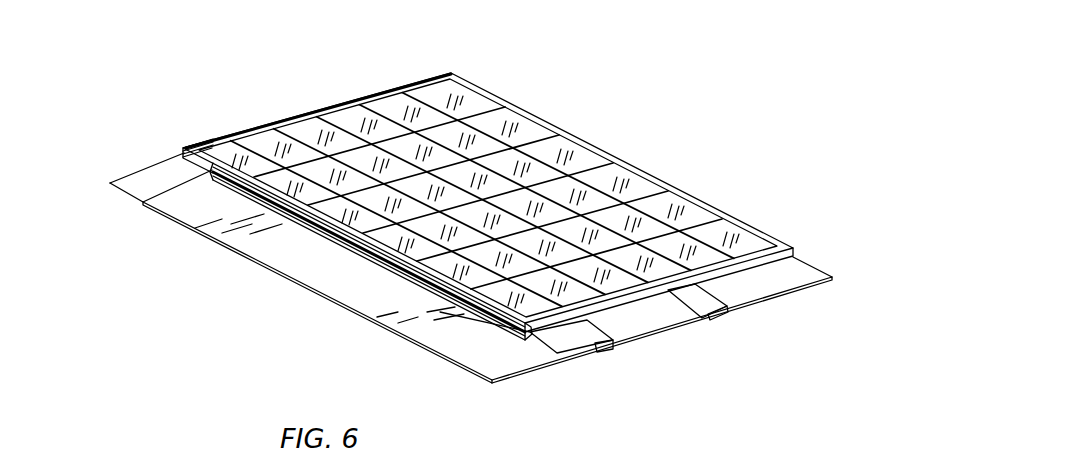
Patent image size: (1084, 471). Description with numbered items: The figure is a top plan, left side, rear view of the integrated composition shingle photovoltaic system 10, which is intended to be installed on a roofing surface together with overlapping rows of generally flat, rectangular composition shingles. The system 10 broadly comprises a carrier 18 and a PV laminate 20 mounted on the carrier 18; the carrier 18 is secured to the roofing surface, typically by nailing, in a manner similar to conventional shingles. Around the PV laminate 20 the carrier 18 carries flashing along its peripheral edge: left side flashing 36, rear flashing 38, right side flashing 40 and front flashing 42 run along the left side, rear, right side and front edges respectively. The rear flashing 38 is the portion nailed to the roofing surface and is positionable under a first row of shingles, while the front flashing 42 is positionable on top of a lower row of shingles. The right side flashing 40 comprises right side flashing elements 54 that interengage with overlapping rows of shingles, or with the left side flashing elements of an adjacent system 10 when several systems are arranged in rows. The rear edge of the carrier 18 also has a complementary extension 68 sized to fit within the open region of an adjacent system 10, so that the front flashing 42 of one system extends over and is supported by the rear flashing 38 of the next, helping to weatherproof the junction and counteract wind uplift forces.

The integrated composition shingle photovoltaic (PV) system 10 is at (640, 46).
The carrier 18 is at (302, 110).
The PV laminate 20 is at (540, 156).
The left side flashing 36 is at (673, 327).
The rear flashing 38 is at (313, 295).
The right side flashing 40 is at (159, 168).
The front flashing 42 is at (698, 193).
The right side flashing elements 54 is at (616, 325).
The complementary extension 68 is at (348, 237).